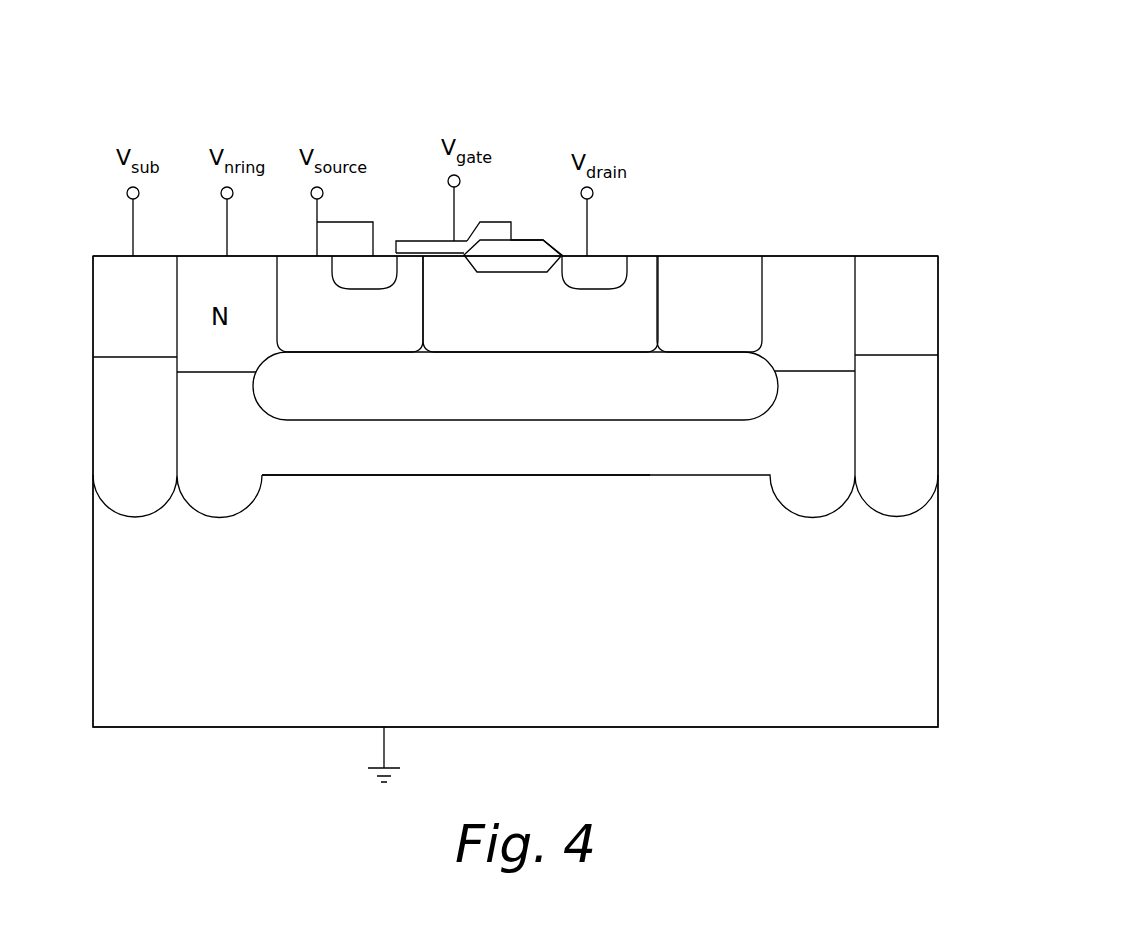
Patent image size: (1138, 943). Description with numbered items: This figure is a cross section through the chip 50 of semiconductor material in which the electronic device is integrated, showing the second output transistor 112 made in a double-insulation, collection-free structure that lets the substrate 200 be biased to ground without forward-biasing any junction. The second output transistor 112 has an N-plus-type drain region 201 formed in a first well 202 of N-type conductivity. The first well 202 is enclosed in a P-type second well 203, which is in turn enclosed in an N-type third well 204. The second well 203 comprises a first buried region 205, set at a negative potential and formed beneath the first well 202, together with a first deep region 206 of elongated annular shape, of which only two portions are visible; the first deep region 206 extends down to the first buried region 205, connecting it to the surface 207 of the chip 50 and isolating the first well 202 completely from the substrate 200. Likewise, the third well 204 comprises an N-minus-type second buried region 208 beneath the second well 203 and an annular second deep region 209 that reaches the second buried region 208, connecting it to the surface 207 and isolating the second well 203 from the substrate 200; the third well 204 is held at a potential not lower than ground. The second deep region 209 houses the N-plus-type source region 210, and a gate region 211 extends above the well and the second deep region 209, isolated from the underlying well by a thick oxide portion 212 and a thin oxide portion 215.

The chip 50 is at (1036, 405).
The second output transistor 112 is at (685, 100).
The substrate 200 is at (220, 712).
The drain region 201 is at (617, 258).
The first well 202 is at (643, 280).
The second well 203 is at (730, 452).
The third well 204 is at (528, 498).
The first buried region 205 is at (752, 370).
The first deep region 206 is at (845, 292).
The surface 207 is at (772, 253).
The second buried region 208 is at (383, 465).
The second deep region 209 is at (302, 270).
The source region 210 is at (367, 290).
The gate region 211 is at (492, 226).
The thick oxide portion 212 is at (537, 250).
The thin oxide portion 215 is at (422, 254).